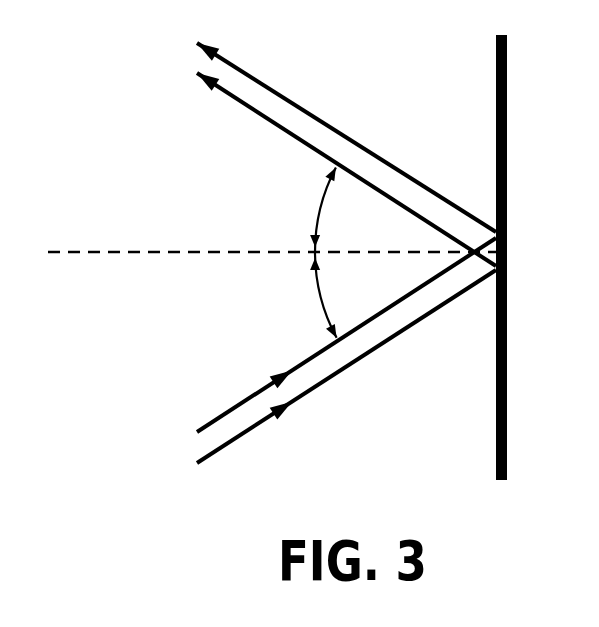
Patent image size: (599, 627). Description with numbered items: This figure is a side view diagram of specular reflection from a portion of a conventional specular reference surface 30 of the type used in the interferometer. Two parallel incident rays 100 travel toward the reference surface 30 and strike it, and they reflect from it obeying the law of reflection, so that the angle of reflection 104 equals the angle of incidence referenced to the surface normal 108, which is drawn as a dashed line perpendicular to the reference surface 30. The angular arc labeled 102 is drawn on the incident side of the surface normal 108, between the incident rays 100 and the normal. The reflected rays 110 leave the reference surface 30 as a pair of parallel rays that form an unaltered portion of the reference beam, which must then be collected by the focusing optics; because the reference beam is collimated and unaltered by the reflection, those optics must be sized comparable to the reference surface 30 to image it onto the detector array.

The reference surface 30 is at (496, 90).
The incident rays 100 is at (255, 432).
The angle of incidence 102 is at (317, 302).
The angle of reflection 104 is at (317, 203).
The surface normal 108 is at (58, 260).
The reflected rays 110 is at (342, 132).